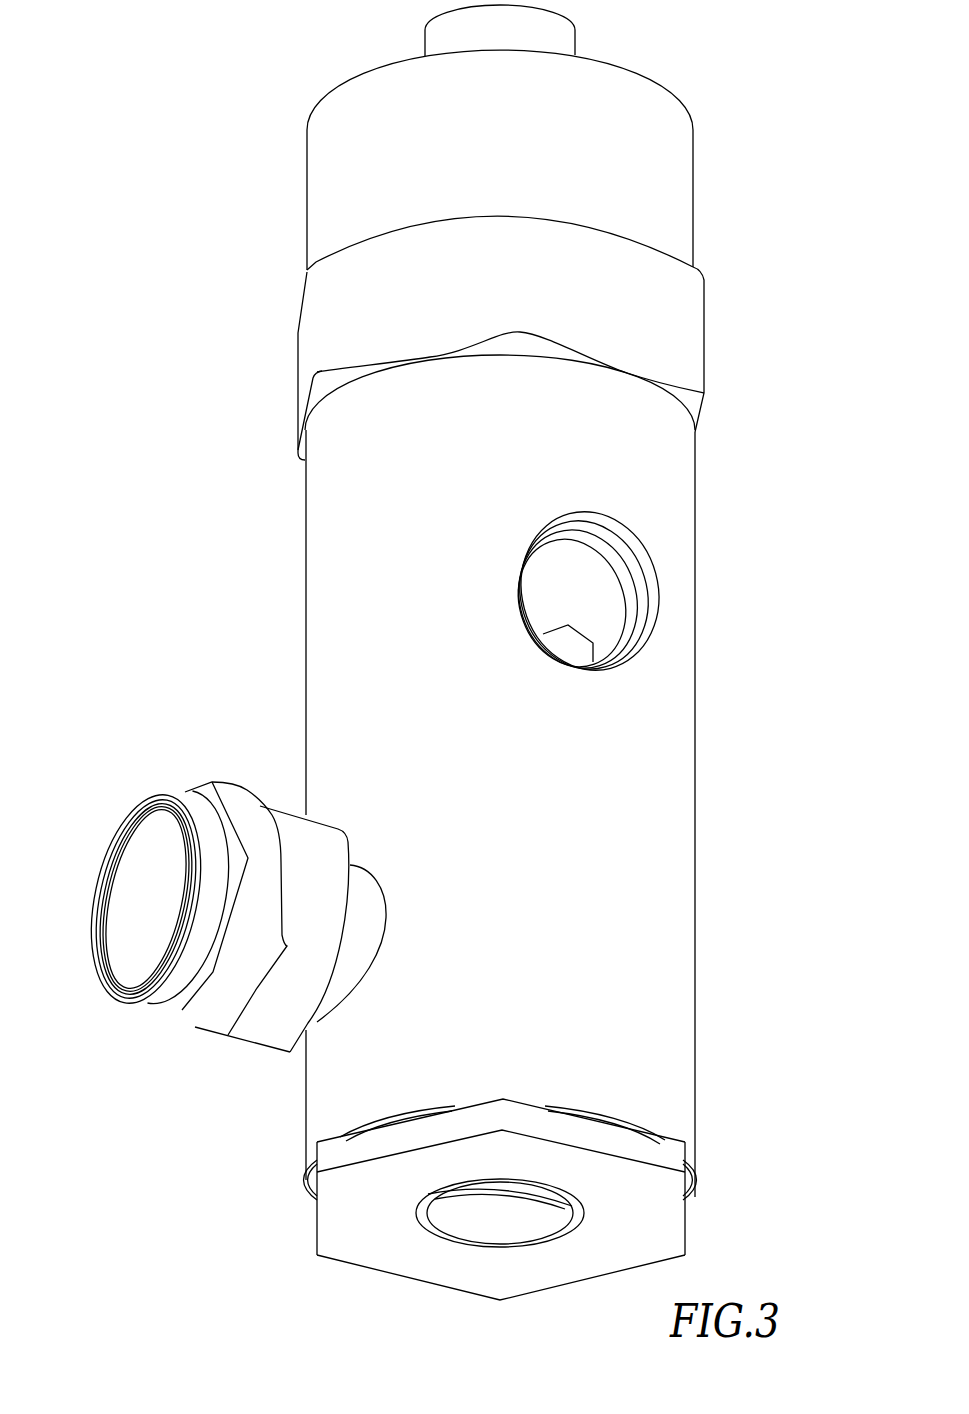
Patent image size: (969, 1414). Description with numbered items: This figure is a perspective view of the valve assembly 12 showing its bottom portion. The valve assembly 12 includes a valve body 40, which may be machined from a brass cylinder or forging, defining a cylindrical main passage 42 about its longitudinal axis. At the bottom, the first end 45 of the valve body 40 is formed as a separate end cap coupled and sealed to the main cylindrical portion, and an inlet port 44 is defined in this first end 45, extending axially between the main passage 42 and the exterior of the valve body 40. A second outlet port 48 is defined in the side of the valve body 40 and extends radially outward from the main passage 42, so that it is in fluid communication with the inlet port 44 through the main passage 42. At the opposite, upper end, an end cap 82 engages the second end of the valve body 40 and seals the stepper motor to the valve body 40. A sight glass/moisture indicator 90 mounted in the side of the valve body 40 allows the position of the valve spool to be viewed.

The valve assembly 12 is at (448, 667).
The end cap 82 is at (678, 190).
The valve body 40 is at (660, 773).
The second outlet port 48 is at (632, 557).
The main passage 42 is at (565, 575).
The inlet port 44 is at (480, 1215).
The first end 45 is at (347, 1272).
The sight glass/moisture indicator 90 is at (105, 843).